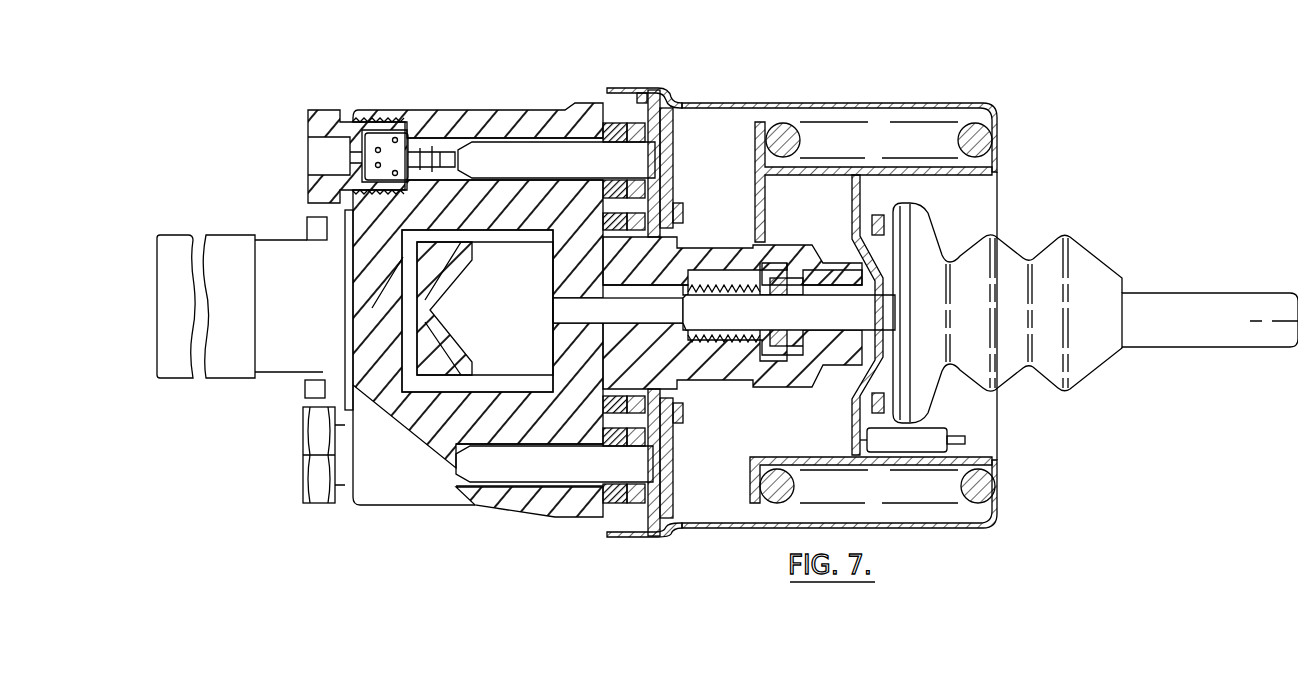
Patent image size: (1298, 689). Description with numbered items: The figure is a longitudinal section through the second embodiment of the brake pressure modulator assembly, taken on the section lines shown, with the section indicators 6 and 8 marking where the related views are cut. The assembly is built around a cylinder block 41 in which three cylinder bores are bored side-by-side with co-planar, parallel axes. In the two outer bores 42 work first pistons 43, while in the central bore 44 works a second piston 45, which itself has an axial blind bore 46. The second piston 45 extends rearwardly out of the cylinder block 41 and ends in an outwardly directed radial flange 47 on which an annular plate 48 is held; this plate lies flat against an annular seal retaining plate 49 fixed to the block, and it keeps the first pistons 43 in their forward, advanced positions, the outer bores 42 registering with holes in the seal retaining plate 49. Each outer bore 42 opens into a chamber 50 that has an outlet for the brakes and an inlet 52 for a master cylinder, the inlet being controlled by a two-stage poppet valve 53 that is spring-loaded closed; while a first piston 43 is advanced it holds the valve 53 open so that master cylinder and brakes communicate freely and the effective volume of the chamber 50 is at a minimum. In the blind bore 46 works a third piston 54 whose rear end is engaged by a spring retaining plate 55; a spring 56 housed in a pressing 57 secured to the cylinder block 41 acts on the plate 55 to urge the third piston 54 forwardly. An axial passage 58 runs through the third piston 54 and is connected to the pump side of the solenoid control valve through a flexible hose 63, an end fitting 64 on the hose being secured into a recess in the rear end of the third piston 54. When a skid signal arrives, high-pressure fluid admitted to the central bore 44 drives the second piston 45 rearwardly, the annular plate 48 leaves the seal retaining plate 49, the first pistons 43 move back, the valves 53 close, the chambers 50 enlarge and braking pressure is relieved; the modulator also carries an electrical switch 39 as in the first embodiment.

The section line 6- 6 is at (146, 290).
The section line 8- 8 is at (528, 592).
The electrical switch 39 is at (948, 438).
The cylinder block 41 is at (583, 118).
The outer bore 42 is at (566, 508).
The first piston 43 is at (588, 171).
The central bore 44 is at (412, 388).
The second piston 45 is at (440, 375).
The axial blind bore 46 is at (519, 244).
The radial flange 47 is at (684, 215).
The annular plate 48 is at (678, 170).
The seal retaining plate 49 is at (652, 96).
The chamber 50 is at (509, 487).
The inlet 52 is at (305, 439).
The two-stage valve 53 is at (432, 150).
The third piston 54 is at (703, 352).
The spring retaining plate 55 is at (749, 470).
The spring 56 is at (995, 488).
The pressing 57 is at (822, 104).
The axial passage 58 is at (565, 303).
The flexible hose 63 is at (1198, 326).
The end fitting 64 is at (777, 280).